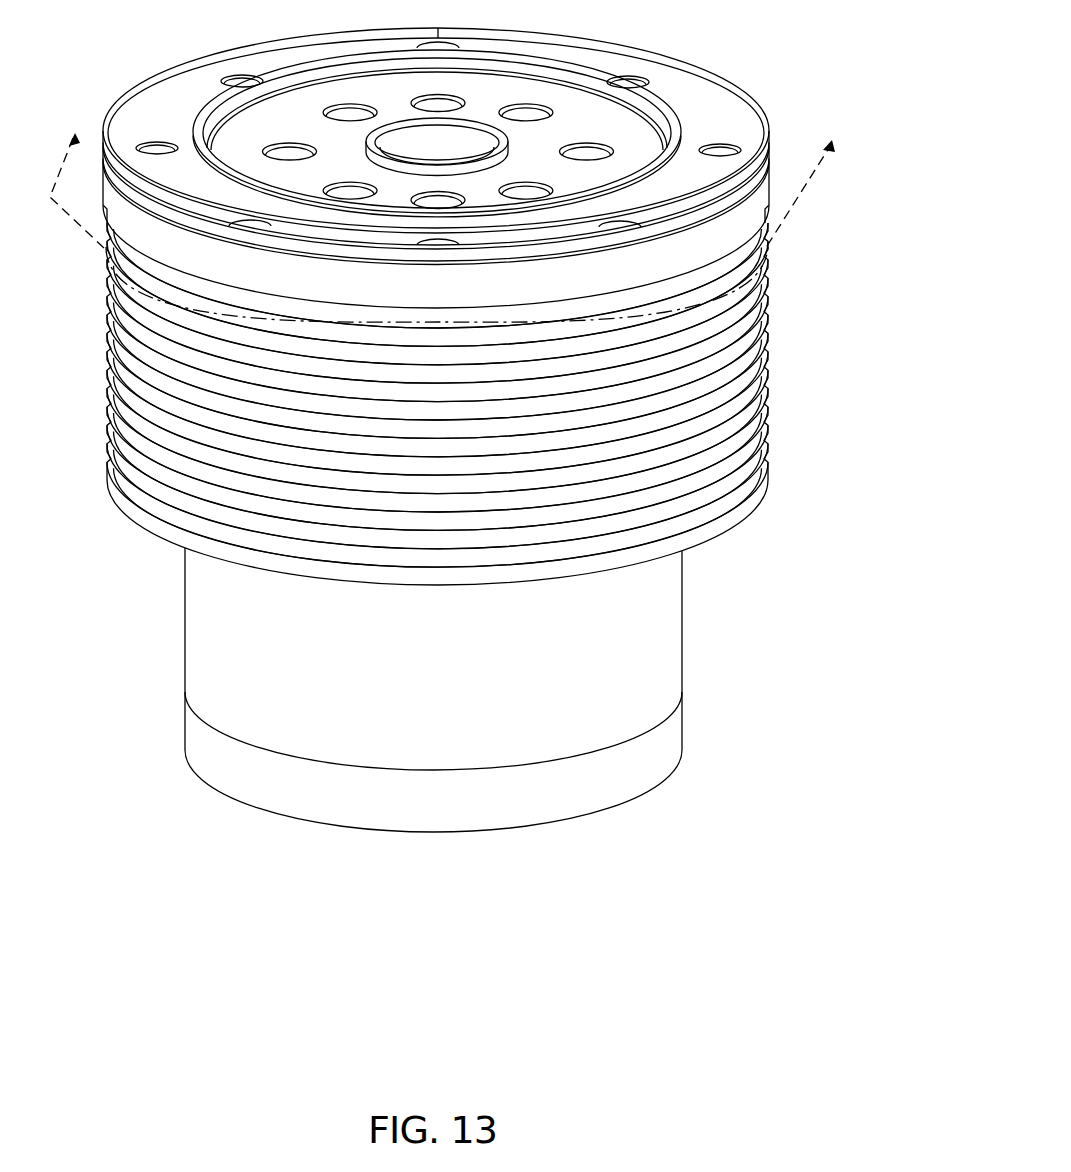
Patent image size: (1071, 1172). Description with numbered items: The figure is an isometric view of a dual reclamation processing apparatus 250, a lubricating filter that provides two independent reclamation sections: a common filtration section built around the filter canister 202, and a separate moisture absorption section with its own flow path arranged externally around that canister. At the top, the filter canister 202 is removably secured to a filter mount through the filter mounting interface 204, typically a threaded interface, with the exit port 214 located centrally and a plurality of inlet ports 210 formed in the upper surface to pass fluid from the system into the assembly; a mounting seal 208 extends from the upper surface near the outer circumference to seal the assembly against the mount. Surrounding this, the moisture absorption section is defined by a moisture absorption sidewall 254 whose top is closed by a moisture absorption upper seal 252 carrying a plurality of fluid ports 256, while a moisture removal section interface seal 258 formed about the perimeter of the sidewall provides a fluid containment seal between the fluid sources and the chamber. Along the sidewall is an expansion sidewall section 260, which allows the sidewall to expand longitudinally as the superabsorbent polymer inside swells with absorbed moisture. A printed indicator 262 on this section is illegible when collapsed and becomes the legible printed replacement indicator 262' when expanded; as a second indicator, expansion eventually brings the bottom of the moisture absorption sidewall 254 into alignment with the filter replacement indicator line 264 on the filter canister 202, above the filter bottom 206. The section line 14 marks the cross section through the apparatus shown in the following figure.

The dual reclamation processing apparatus 250 is at (100, 70).
The moisture absorption upper seal 252 is at (178, 108).
The moisture removal section interface seal 258 is at (585, 48).
The mounting seal 208 is at (658, 100).
The fluid ports 256 is at (722, 146).
The filter mounting interface 204 is at (385, 144).
The exit port 214 is at (435, 143).
The inlet ports 210 is at (582, 150).
The cross sectional view (FIG. 14 section line) 14 is at (455, 215).
The moisture absorption sidewall 254 is at (772, 236).
The expansion sidewall section 260 is at (760, 398).
The printed indicator 262 is at (325, 478).
The printed replacement indicator 262' is at (90, 569).
The filter canister 202 is at (676, 598).
The filter replacement indicator line 264 is at (280, 752).
The filter bottom 206 is at (420, 840).